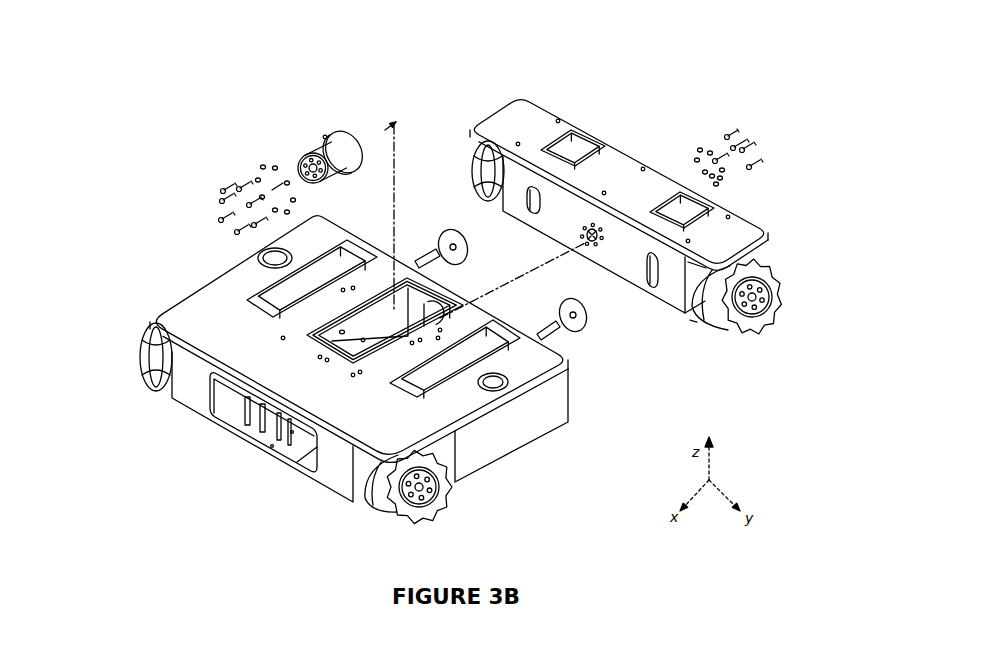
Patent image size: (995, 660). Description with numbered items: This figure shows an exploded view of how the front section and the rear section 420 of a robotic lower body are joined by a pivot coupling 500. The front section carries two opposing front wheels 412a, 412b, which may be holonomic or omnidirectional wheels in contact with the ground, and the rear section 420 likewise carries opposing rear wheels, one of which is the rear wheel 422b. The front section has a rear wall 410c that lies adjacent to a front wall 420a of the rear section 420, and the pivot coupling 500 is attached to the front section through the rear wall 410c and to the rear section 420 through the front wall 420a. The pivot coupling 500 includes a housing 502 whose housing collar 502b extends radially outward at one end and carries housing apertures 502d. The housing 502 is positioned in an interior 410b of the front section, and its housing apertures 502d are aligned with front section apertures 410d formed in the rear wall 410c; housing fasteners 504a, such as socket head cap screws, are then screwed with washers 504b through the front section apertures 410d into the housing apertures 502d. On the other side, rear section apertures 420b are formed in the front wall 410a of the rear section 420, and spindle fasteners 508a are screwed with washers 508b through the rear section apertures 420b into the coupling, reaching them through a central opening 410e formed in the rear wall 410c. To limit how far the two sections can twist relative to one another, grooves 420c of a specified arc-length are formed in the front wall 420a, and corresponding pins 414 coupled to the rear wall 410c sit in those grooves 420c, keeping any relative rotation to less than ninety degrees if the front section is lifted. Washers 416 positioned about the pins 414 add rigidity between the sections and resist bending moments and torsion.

The pivot coupling 500 is at (350, 117).
The housing 502 is at (305, 146).
The housing collar 502b is at (338, 128).
The housing apertures 502d is at (315, 128).
The housing fasteners 504a is at (215, 203).
The washers 504b is at (260, 165).
The front wall 410a is at (178, 308).
The interior 410b is at (365, 325).
The rear wall 410c is at (490, 348).
The front section apertures 410d is at (438, 290).
The central opening 410e is at (362, 323).
The front wheel 412a is at (140, 362).
The front wheel 412b is at (440, 507).
The pins 414 is at (433, 250).
The washers 416 is at (453, 232).
The rear section 420 is at (745, 226).
The front wall 420a is at (632, 273).
The rear section apertures 420b is at (587, 233).
The grooves 420c is at (527, 205).
The rear wheel 422b is at (770, 313).
The spindle fasteners 508a is at (755, 142).
The washers 508b is at (700, 150).